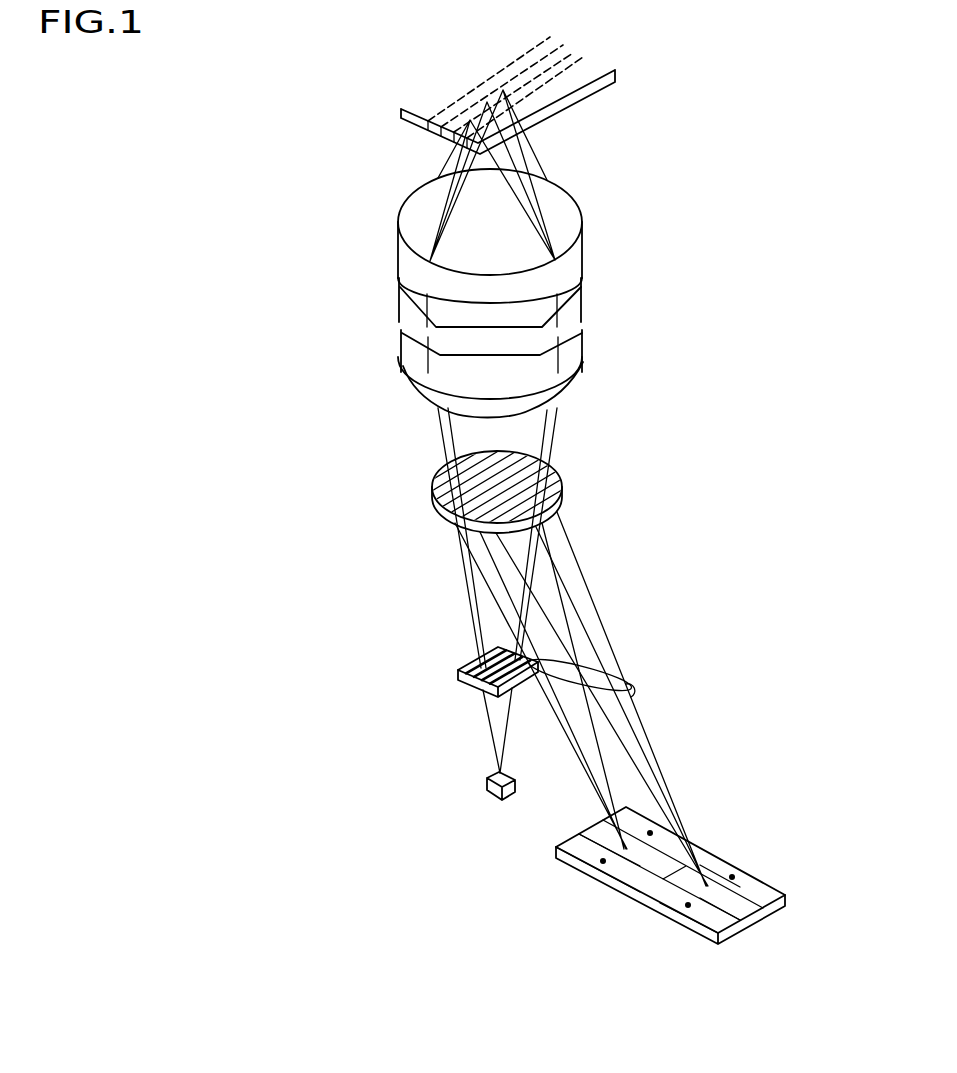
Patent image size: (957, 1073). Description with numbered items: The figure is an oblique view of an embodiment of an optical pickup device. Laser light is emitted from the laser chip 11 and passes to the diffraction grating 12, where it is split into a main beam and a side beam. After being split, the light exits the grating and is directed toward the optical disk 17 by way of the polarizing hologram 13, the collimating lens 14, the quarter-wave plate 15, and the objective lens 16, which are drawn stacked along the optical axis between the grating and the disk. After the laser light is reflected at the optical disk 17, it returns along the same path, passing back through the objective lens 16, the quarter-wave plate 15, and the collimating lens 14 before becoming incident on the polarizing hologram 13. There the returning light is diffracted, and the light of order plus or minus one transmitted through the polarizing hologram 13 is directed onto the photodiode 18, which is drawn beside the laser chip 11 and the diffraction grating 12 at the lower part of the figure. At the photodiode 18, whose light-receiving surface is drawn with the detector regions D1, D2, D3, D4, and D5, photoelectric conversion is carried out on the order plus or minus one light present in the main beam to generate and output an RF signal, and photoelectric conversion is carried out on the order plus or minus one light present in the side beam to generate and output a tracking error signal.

The laser chip 11 is at (487, 781).
The diffraction grating 12 is at (458, 676).
The polarizing hologram 13 is at (432, 488).
The collimating lens 14 is at (402, 376).
The quarter-wave plate 15 is at (400, 298).
The objective lens 16 is at (400, 244).
The optical disk 17 is at (572, 106).
The photodiode 18 is at (767, 923).
The photodetector segment D1 is at (628, 884).
The photodetector segment D2 is at (711, 908).
The photodetector segment D3 is at (742, 891).
The photodetector segment D4 is at (603, 842).
The photodetector segment D5 is at (721, 856).